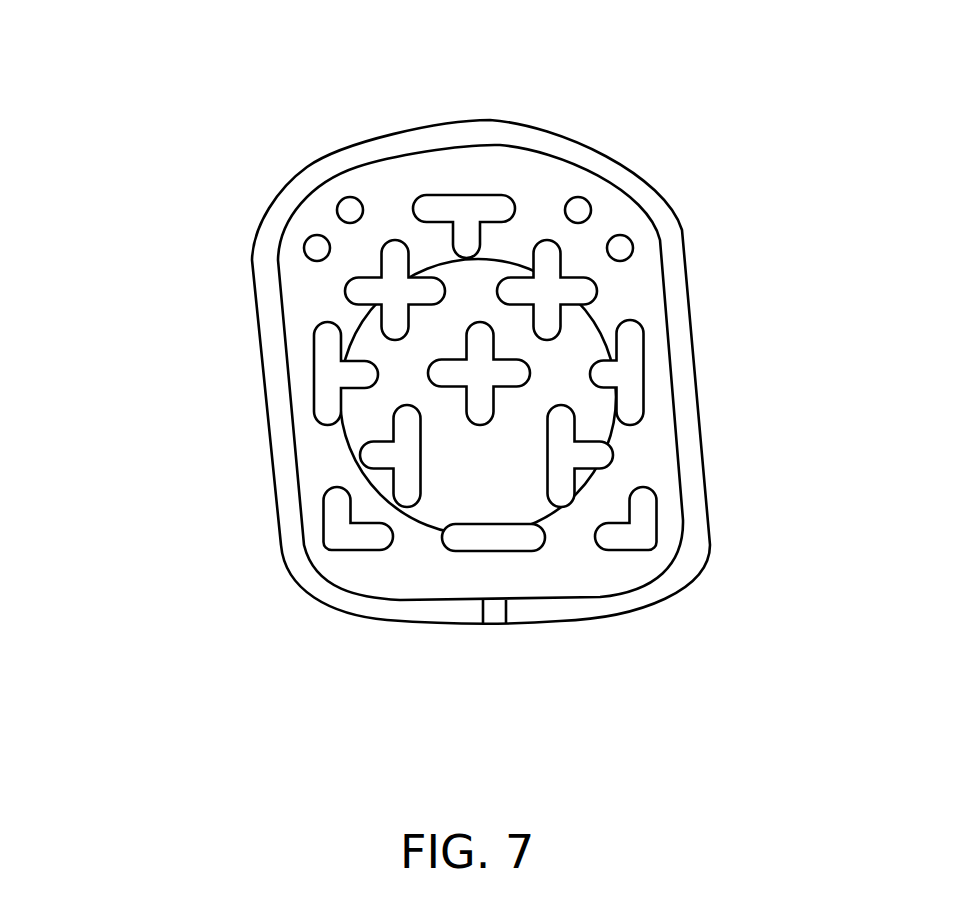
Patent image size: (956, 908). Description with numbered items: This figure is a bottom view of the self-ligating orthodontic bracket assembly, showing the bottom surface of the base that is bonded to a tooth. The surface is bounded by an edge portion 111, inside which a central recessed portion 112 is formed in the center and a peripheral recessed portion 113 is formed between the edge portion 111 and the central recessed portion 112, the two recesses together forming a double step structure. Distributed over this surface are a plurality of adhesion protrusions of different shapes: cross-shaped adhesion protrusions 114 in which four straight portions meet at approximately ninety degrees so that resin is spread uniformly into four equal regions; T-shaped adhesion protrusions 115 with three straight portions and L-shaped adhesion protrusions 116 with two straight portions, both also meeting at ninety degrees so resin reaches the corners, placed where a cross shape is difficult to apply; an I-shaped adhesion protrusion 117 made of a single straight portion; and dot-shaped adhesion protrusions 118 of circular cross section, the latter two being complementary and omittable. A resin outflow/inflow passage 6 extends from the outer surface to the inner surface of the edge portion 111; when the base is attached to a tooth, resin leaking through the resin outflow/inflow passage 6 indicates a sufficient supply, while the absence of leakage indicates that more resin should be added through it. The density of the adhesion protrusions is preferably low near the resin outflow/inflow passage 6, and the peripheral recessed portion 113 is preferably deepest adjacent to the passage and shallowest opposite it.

The resin outflow/inflow passage 6 is at (493, 623).
The edge portion 111 is at (537, 133).
The central recessed portion 112 is at (383, 349).
The peripheral recessed portion 113 is at (615, 207).
The cross-shaped adhesion protrusion 114 is at (598, 292).
The T-shaped adhesion protrusion 115 is at (645, 412).
The L-shaped adhesion protrusion 116 is at (650, 543).
The I-shaped adhesion protrusion 117 is at (518, 538).
The dot-shaped adhesion protrusion 118 is at (343, 208).